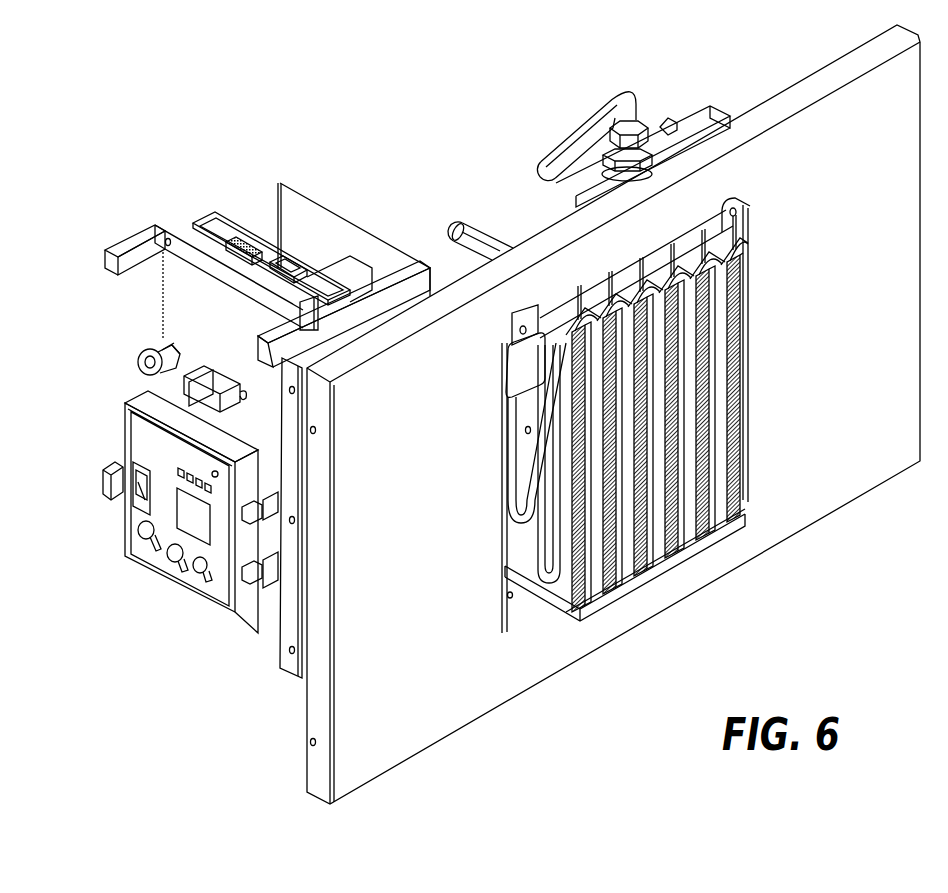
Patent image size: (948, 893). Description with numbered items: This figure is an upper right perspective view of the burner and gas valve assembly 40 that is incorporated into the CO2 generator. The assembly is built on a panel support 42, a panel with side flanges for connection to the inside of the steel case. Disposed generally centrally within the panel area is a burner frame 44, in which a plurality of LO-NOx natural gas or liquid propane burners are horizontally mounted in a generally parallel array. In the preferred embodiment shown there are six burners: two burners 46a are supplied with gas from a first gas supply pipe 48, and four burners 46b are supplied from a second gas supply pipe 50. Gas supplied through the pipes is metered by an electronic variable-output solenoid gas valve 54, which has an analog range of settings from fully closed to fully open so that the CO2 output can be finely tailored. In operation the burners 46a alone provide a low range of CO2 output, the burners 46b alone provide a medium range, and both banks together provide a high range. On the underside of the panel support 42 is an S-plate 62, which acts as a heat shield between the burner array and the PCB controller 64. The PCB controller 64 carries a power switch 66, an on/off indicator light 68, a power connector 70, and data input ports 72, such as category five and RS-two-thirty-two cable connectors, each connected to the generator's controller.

The burner and gas valve assembly 40 is at (316, 106).
The panel support 42 is at (860, 470).
The burner frame 44 is at (512, 323).
The burners 46a is at (712, 540).
The burners 46b is at (582, 612).
The first gas supply pipe 48 is at (572, 142).
The second gas supply pipe 50 is at (460, 224).
The first electronic variable-output solenoid gas valve 54 is at (697, 122).
The S-plate 62 is at (297, 192).
The PCB controller 64 is at (248, 613).
The power switch 66 is at (196, 395).
The on/off indicator light 68 is at (148, 350).
The power connector 70 is at (193, 518).
The data input ports 72 is at (289, 266).